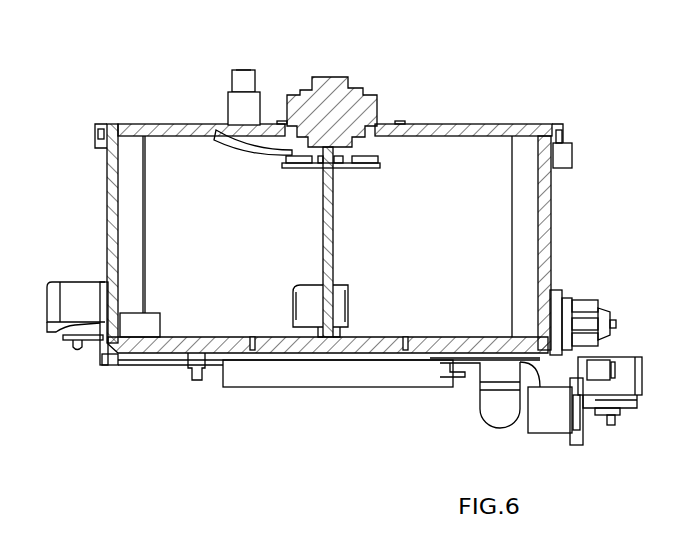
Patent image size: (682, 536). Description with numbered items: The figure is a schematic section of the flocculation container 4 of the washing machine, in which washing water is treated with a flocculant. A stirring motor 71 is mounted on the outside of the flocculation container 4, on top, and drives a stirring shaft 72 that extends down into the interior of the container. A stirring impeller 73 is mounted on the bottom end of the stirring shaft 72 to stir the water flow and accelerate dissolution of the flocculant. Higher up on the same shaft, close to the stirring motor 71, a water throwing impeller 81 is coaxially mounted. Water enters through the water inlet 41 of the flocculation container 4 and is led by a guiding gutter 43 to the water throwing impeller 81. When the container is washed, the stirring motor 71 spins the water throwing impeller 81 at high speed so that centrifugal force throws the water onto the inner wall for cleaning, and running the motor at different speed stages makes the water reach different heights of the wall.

The flocculation container 4 is at (490, 157).
The water inlet 41 is at (240, 108).
The guiding gutter 43 is at (225, 127).
The stirring motor 71 is at (342, 97).
The stirring shaft 72 is at (328, 220).
The stirring impeller 73 is at (310, 318).
The water throwing impeller 81 is at (364, 165).